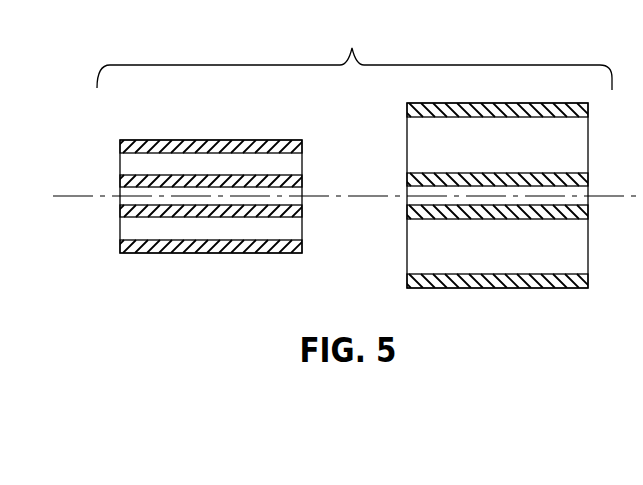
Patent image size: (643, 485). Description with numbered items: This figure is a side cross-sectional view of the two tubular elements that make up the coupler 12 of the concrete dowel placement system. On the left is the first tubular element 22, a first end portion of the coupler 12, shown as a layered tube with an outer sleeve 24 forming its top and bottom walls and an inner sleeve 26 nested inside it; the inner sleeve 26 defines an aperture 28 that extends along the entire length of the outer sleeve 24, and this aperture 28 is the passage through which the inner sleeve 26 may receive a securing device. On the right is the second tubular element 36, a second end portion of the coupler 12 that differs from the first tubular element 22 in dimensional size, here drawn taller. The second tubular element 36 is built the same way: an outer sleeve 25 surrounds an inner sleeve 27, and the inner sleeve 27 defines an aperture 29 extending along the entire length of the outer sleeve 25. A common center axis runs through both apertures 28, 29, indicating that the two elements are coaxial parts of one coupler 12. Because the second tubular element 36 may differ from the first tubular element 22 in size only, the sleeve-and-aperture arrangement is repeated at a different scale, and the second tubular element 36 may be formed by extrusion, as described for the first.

The coupler 12 is at (354, 56).
The first tubular element 22 is at (170, 267).
The outer sleeve 24 is at (235, 145).
The outer sleeve 25 is at (482, 278).
The inner sleeve 26 is at (298, 213).
The inner sleeve 27 is at (585, 213).
The aperture 28 is at (292, 193).
The aperture 29 is at (583, 193).
The second tubular element 36 is at (577, 302).